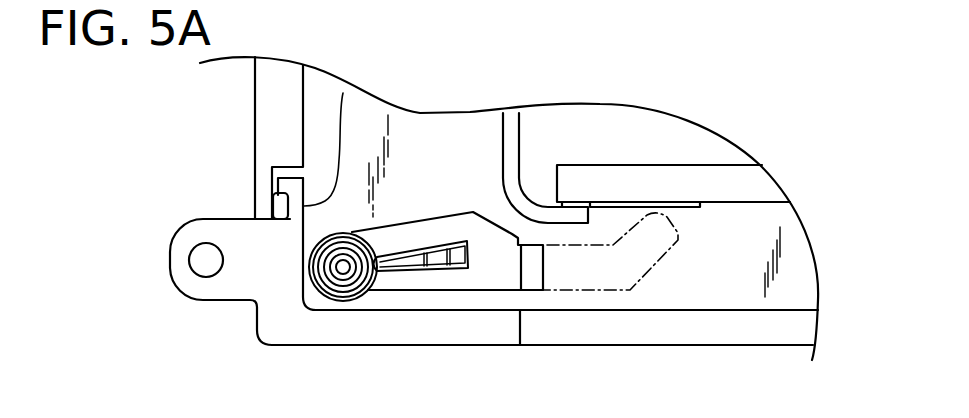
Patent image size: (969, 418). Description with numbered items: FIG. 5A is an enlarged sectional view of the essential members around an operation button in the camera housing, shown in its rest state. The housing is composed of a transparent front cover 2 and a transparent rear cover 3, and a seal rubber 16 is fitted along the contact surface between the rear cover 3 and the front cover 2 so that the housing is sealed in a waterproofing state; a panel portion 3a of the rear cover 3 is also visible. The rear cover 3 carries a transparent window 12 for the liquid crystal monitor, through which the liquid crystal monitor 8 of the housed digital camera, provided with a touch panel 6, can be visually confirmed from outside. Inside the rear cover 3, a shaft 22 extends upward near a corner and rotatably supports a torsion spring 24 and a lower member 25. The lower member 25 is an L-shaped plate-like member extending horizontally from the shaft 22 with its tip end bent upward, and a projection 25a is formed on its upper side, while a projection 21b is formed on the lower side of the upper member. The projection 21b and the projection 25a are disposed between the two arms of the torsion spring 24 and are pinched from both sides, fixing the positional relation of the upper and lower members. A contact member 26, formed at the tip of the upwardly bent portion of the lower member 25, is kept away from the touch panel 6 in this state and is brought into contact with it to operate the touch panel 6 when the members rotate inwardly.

The front cover 2 is at (255, 108).
The rear cover 3 is at (192, 240).
The panel portion of bracket 3a is at (343, 93).
The seal rubber 16 is at (280, 205).
The projection 21b is at (457, 242).
The shaft 22 is at (343, 268).
The torsion spring 24 is at (362, 292).
The lower member 25 is at (502, 275).
The projection 25a is at (435, 260).
The contact member 26 is at (607, 280).
The liquid crystal monitor 8 is at (757, 185).
The touch panel 6 is at (700, 205).
The window for liquid crystal monitor 12 is at (767, 332).